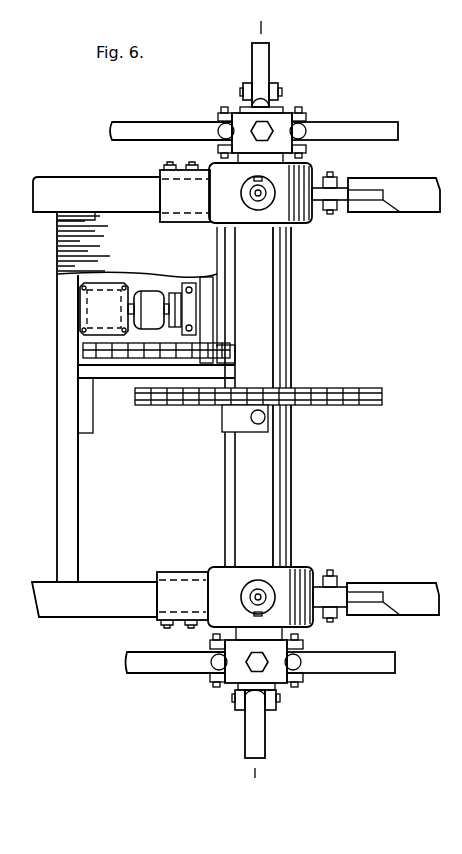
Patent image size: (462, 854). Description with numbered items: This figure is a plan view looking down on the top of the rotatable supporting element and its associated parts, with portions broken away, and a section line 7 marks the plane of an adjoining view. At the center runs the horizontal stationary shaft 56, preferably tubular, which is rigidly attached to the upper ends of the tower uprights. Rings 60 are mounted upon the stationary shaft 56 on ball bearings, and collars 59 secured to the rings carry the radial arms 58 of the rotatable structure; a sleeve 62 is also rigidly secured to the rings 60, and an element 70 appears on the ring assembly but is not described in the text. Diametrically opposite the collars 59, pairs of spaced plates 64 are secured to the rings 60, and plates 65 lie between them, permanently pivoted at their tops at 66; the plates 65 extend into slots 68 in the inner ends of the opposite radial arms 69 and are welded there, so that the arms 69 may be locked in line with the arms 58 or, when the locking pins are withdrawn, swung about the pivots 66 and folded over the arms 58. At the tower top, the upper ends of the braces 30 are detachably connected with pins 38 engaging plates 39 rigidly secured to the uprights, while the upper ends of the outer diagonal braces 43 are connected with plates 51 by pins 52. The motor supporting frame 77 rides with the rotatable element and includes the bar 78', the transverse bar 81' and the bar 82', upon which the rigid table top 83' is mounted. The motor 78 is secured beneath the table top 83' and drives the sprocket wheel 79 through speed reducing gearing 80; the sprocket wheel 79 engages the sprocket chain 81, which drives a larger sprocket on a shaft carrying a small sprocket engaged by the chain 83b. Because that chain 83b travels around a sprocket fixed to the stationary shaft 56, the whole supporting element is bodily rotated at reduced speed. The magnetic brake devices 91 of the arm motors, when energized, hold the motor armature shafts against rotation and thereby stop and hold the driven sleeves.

The section line 7- 7 is at (258, 399).
The outer diagonal braces 43 is at (271, 58).
The plates 51 is at (276, 84).
The pins 52 is at (283, 95).
The pins 38 is at (222, 113).
The plates 39 is at (216, 117).
The braces 30 is at (142, 122).
The radial arms 58 is at (72, 177).
The collars 59 is at (176, 222).
The rings 60 is at (284, 232).
The sleeve 62 is at (275, 203).
The bearing 70 is at (255, 191).
The pivots 66 is at (330, 176).
The pairs of spaced plates 64 is at (344, 188).
The plates 65 is at (373, 203).
The slots 68 is at (391, 206).
The radial arms 69 is at (423, 186).
The stationary shaft 56 is at (287, 500).
The motor supporting frame 77 is at (49, 410).
The motor 78 is at (157, 288).
The second bar 78' is at (118, 404).
The sprocket wheel 79 is at (82, 352).
The speed reducing gearing 80 is at (80, 311).
The sprocket chain 81 is at (156, 390).
The transverse bar 81' is at (94, 405).
The bar 82' is at (196, 292).
The table top 83' is at (65, 244).
The sprocket chain 83b is at (185, 407).
The magnetic brake devices 91 is at (196, 300).